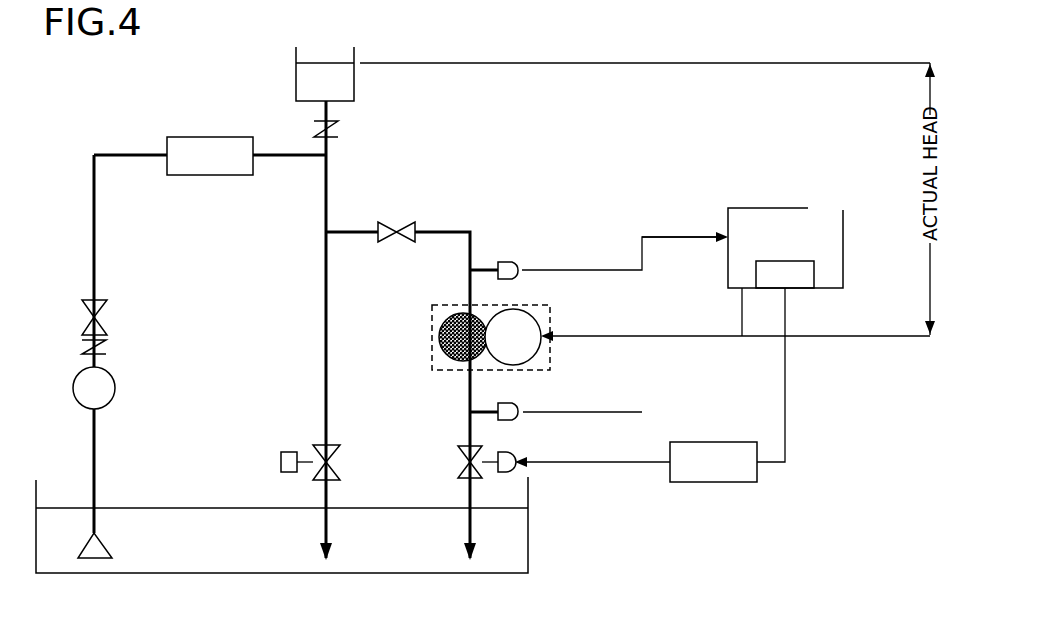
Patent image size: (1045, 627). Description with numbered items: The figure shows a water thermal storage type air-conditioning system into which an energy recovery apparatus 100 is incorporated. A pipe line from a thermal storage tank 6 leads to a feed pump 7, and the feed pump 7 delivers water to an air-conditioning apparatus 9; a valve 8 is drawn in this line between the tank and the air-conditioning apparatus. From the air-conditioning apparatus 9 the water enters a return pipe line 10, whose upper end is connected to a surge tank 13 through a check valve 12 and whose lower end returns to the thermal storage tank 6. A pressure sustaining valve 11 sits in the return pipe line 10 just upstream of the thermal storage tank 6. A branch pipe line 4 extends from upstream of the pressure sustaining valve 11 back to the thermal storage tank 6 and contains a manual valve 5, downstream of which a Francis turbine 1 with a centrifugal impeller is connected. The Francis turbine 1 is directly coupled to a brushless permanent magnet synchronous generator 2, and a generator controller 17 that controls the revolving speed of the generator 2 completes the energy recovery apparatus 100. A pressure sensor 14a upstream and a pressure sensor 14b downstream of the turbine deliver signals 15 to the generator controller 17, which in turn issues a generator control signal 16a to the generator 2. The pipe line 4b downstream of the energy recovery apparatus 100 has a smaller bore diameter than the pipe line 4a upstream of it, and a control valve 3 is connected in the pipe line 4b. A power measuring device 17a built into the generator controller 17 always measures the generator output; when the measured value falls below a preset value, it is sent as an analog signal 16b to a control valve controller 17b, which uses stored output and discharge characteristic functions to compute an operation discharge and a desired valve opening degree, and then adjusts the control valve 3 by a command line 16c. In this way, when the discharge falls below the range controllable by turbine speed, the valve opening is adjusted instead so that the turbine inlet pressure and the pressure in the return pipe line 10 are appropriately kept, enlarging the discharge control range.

The Francis turbine 1 is at (440, 337).
The brushless permanent magnet synchronous generator 2 is at (537, 307).
The control valve 3 is at (458, 460).
The branch pipe line 4 is at (355, 228).
The pipe line upstream of the energy recovery apparatus 4a is at (452, 230).
The pipe line downstream of the energy recovery apparatus 4b is at (466, 420).
The manual valve 5 is at (414, 224).
The thermal storage tank 6 is at (150, 506).
The feed pump 7 is at (116, 388).
The valve 8 is at (108, 312).
The air-conditioning apparatus 9 is at (212, 175).
The return pipe line 10 is at (324, 276).
The pressure sustaining valve 11 is at (281, 463).
The check valve 12 is at (340, 126).
The surge tank 13 is at (294, 62).
The pressure sensor 14a is at (520, 262).
The pressure sensor 14b is at (508, 402).
The signals 15 is at (682, 234).
The generator control signal 16a is at (698, 338).
The analog signal 16b is at (786, 424).
The signal line 16c is at (607, 464).
The generator controller 17 is at (783, 208).
The power measuring device 17a is at (814, 270).
The control valve controller 17b is at (713, 482).
The energy recovery apparatus 100 is at (428, 316).